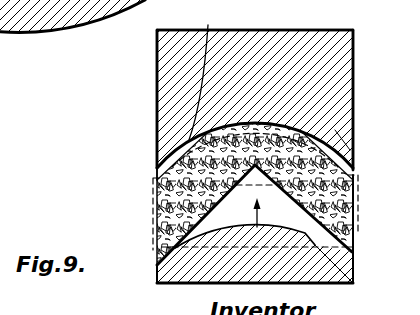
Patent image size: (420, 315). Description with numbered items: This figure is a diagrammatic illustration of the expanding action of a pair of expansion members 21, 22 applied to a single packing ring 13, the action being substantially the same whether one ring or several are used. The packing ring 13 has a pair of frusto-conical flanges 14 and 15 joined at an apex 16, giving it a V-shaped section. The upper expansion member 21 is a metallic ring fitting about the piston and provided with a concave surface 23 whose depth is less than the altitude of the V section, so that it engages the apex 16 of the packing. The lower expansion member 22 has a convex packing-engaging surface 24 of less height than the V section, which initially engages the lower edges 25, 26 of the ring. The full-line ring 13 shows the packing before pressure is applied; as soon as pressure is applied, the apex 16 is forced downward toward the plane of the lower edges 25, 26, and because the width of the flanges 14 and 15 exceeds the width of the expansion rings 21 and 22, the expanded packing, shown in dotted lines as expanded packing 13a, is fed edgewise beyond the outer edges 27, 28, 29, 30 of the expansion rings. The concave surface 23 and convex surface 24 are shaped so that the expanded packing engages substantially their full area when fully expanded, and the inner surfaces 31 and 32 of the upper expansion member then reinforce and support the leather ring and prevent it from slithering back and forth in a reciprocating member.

The packing ring 13 is at (324, 178).
The expanded packing 13a is at (152, 190).
The frusto-conical flange 14 is at (346, 124).
The frusto-conical flange 15 is at (157, 145).
The apex 16 is at (263, 122).
The expansion member 21 is at (270, 33).
The expansion member 22 is at (194, 270).
The concave surface 23 is at (207, 71).
The convex packing engaging surface 24 is at (355, 283).
The lower edge 25 is at (157, 252).
The lower edge 26 is at (355, 238).
The outer edge of expansion ring 27 is at (157, 97).
The outer edge of expansion ring 28 is at (157, 279).
The outer edge of expansion ring 29 is at (353, 75).
The outer edge of expansion ring 30 is at (343, 255).
The inner surface of upper expansion member 31 is at (157, 153).
The inner surface of upper expansion member 32 is at (335, 130).